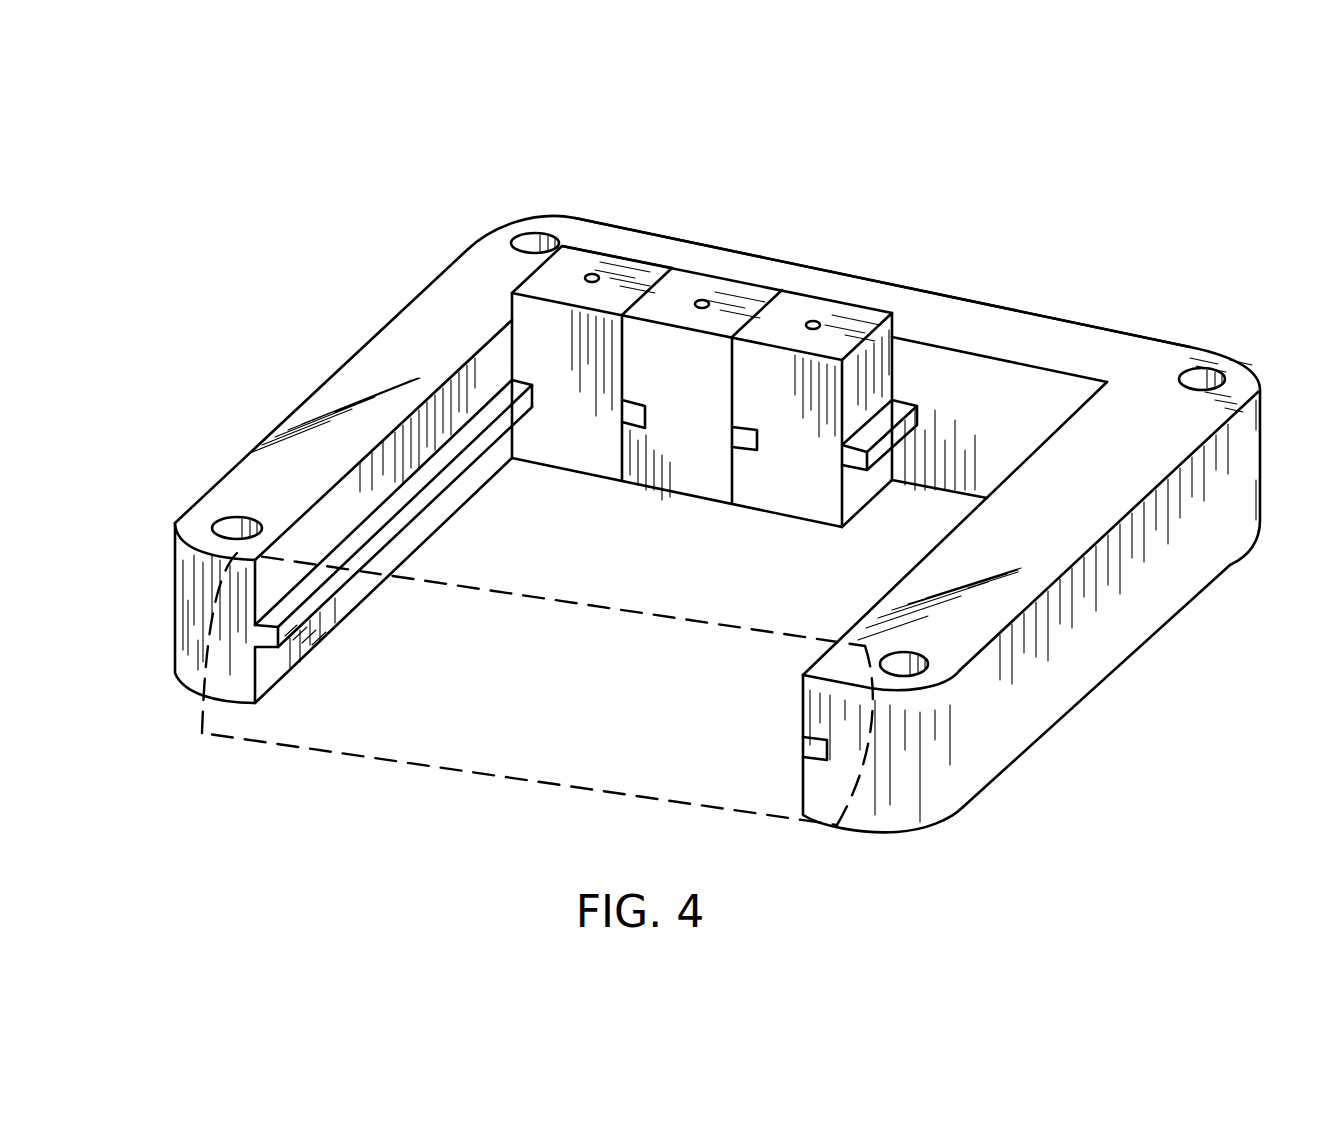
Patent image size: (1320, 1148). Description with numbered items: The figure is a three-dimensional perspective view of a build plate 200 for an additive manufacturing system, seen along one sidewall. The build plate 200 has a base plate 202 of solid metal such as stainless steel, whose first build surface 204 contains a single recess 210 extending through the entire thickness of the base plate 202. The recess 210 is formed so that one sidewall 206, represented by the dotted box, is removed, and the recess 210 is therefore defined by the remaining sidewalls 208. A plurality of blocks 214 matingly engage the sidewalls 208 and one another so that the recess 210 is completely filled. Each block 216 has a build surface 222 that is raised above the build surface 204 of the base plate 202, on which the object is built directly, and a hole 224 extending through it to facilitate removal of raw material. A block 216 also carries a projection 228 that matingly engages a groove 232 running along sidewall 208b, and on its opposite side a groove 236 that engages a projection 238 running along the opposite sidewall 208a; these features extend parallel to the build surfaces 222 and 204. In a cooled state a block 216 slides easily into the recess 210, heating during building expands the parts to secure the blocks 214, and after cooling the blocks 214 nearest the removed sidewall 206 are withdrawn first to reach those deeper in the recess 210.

The build plate 200 is at (336, 168).
The base plate 202 is at (1140, 718).
The first build surface 204 is at (1070, 530).
The sidewall 206 is at (490, 770).
The remaining sidewalls 208 is at (1045, 380).
The sidewall 208a is at (378, 456).
The sidewall 208b is at (935, 527).
The recess 210 is at (968, 470).
The plurality of blocks 214 is at (821, 274).
The block 216 is at (641, 236).
The build surface 222 is at (548, 289).
The hole 224 is at (592, 274).
The projection 228 is at (917, 418).
The groove 232 is at (813, 750).
The groove 236 is at (523, 382).
The projection 238 is at (318, 597).